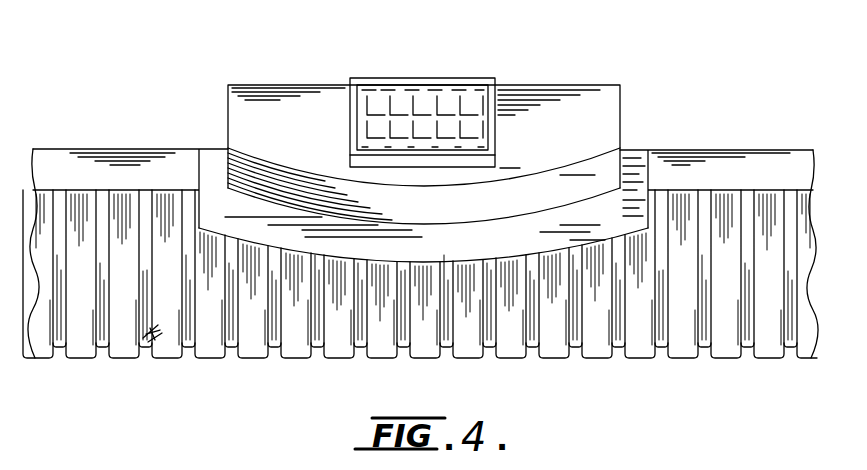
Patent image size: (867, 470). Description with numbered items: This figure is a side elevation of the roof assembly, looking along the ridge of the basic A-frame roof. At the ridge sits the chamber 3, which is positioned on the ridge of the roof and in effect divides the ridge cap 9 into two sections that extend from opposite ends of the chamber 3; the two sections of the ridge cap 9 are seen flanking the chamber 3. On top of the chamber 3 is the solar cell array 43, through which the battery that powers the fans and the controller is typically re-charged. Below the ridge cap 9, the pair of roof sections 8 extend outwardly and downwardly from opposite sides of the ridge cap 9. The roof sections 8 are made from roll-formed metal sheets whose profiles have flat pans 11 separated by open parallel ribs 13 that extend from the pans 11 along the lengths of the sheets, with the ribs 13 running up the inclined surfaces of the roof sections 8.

The chamber 3 is at (290, 105).
The solar cell array 43 is at (410, 103).
The ridge cap 9 is at (153, 175).
The roof sections 8 is at (162, 323).
The ribs 13 is at (273, 347).
The pans 11 is at (725, 349).